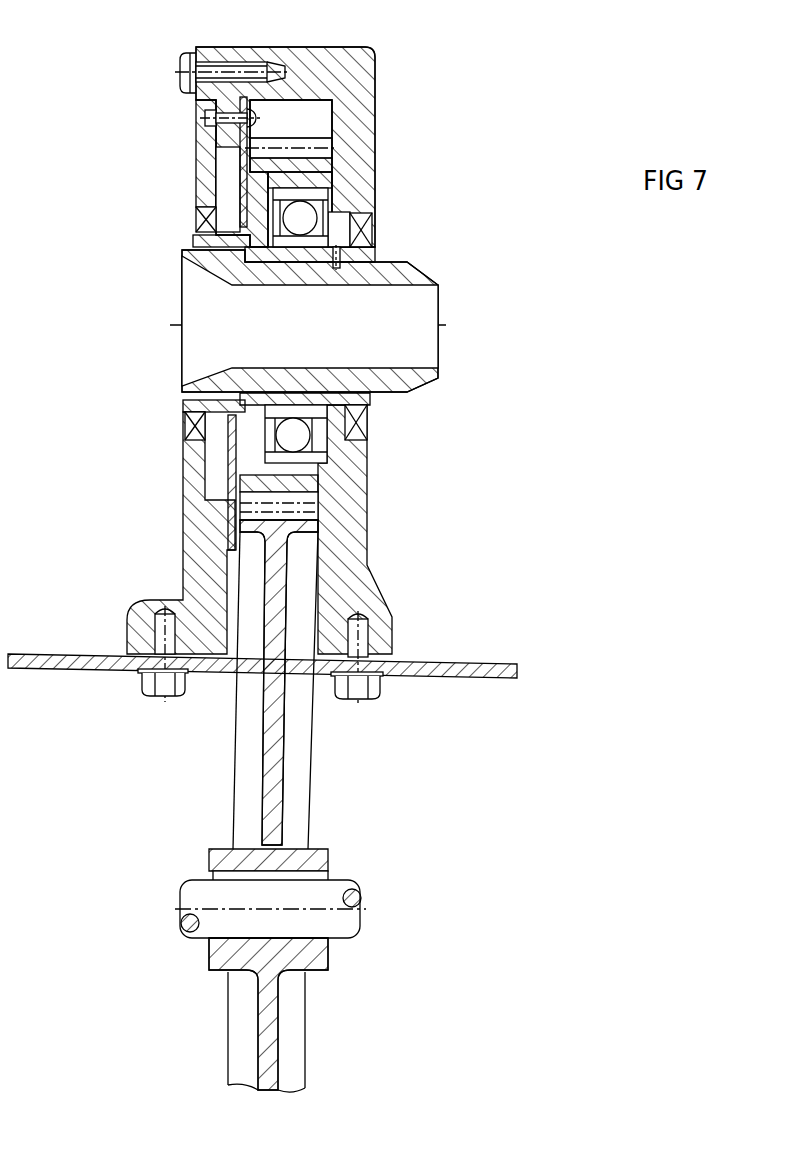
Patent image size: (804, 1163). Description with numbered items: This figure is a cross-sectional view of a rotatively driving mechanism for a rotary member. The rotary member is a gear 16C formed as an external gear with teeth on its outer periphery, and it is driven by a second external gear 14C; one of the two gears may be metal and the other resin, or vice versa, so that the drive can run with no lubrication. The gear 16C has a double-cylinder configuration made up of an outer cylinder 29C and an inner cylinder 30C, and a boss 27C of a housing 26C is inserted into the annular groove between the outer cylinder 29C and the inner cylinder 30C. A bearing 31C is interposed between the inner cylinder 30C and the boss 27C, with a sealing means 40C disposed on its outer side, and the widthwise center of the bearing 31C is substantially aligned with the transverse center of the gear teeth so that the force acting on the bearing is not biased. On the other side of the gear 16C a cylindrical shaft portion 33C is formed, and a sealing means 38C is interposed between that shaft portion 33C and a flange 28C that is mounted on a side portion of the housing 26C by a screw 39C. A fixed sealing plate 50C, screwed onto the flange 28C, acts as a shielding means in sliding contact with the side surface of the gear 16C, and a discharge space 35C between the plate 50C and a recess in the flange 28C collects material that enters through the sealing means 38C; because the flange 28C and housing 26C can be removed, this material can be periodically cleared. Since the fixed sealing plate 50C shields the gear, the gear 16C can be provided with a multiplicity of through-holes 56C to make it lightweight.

The gear 14C is at (280, 528).
The gear 16C is at (375, 122).
The housing 26C is at (375, 138).
The boss 27C is at (375, 178).
The flange 28C is at (196, 177).
The outer cylinder 29C is at (300, 487).
The inner cylinder 30C is at (375, 253).
The bearing 31C is at (300, 218).
The cylindrical shaft portion 33C is at (196, 243).
The discharge space 35C is at (222, 455).
The sealing means 38C is at (196, 222).
The screw 39C is at (183, 80).
The sealing means 40C is at (367, 417).
The fixed sealing plate 50C is at (203, 128).
The through-holes 56C is at (233, 476).